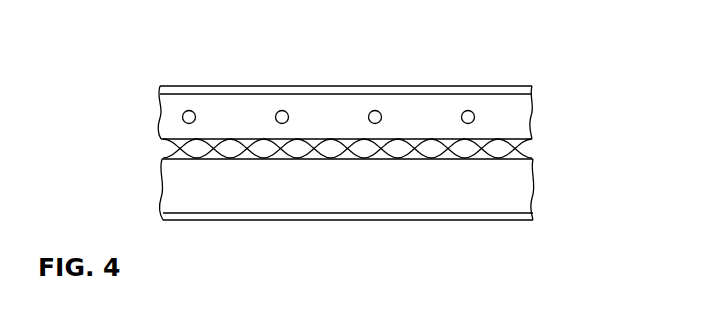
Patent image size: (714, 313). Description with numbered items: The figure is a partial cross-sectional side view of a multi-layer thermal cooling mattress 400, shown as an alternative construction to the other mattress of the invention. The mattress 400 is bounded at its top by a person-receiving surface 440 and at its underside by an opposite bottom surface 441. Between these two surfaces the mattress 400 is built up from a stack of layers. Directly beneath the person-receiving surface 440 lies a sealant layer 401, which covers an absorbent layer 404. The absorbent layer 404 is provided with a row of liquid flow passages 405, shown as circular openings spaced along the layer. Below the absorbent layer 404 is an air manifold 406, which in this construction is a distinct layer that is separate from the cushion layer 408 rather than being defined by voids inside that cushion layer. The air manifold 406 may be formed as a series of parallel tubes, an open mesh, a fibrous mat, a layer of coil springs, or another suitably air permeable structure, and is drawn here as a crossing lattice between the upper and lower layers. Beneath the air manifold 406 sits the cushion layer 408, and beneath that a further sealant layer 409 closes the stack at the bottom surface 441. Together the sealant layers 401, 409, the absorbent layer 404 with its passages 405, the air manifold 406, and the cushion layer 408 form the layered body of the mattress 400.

The mattress 400 is at (451, 57).
The sealant layer 401 is at (275, 86).
The absorbent layer 404 is at (523, 113).
The liquid flow passages 405 is at (182, 117).
The air manifold 406 is at (530, 150).
The cushion layer 408 is at (523, 193).
The sealant layer 409 is at (258, 221).
The person-receiving surface 440 is at (345, 86).
The bottom surface 441 is at (363, 221).